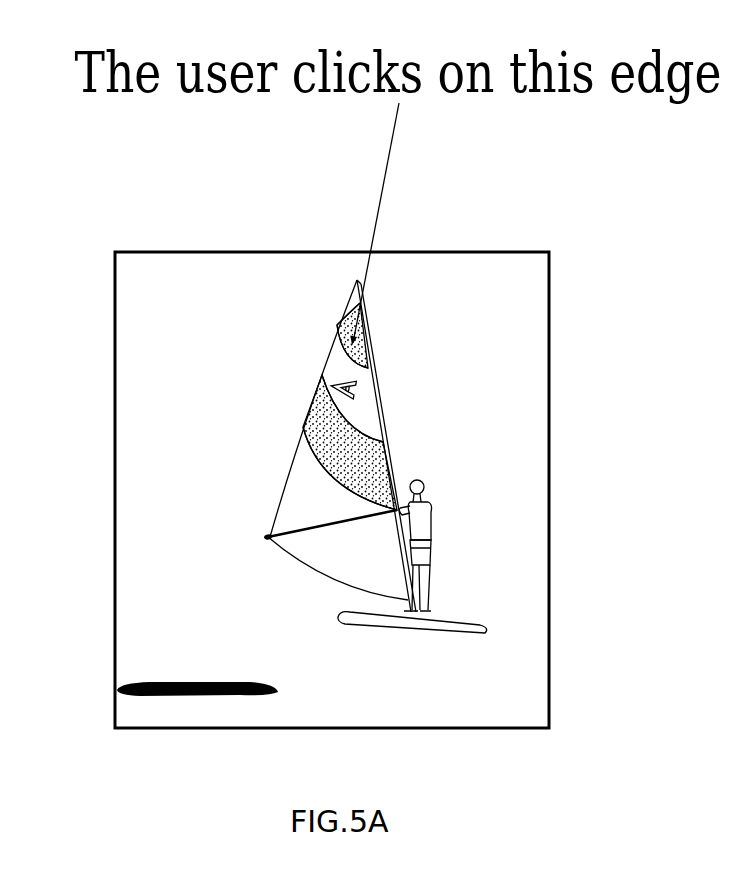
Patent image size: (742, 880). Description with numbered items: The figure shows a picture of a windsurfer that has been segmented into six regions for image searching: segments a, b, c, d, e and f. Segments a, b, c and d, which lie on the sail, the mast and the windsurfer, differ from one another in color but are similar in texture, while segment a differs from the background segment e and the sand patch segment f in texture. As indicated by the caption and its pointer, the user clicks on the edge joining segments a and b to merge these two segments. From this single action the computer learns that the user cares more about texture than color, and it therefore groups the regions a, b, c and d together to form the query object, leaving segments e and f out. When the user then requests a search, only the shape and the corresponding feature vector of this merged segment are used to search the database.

The segment a is at (352, 318).
The segment b is at (367, 400).
The segment c is at (381, 463).
The segment d is at (439, 540).
The segment e is at (522, 578).
The segment f is at (165, 705).